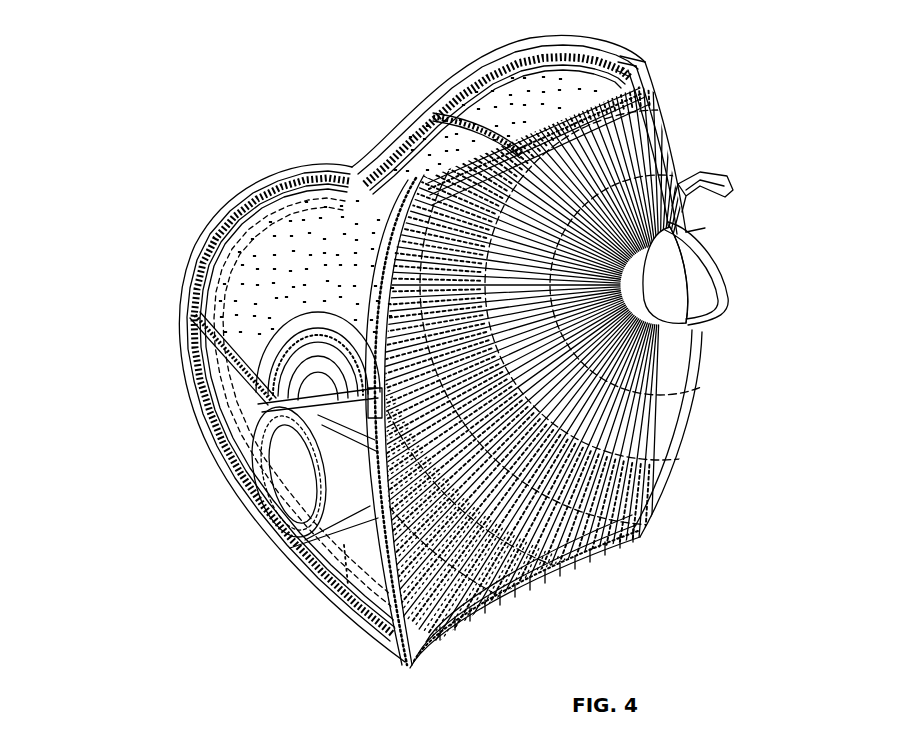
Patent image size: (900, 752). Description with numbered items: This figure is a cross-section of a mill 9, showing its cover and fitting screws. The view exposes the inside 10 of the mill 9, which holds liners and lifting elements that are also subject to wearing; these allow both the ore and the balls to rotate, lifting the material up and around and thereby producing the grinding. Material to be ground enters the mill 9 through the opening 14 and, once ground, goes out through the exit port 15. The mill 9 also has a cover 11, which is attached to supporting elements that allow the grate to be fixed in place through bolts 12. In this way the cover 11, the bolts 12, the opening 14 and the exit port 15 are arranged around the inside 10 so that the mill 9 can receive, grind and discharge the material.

The mill 9 is at (303, 132).
The inside 10 is at (565, 562).
The cover 11 is at (260, 280).
The bolts 12 is at (262, 338).
The opening 14 is at (718, 250).
The exit port 15 is at (292, 470).